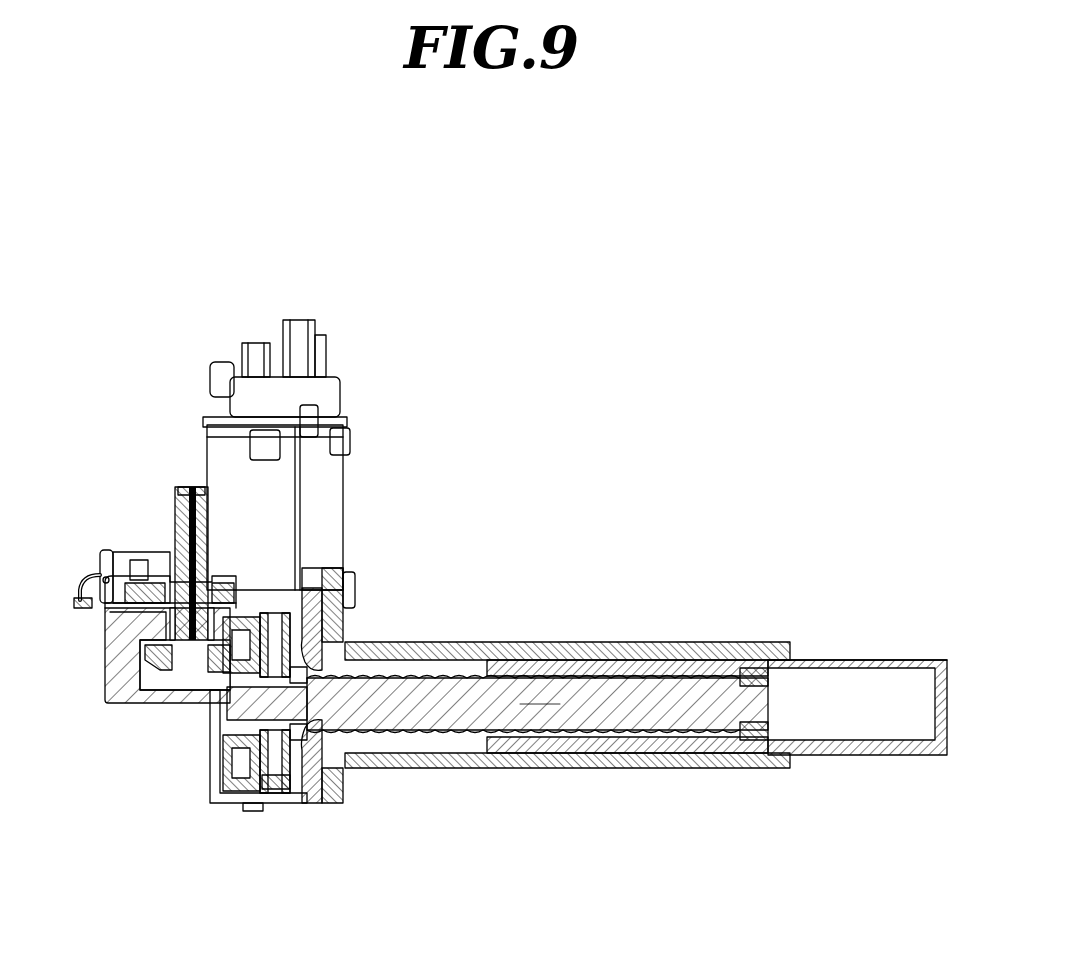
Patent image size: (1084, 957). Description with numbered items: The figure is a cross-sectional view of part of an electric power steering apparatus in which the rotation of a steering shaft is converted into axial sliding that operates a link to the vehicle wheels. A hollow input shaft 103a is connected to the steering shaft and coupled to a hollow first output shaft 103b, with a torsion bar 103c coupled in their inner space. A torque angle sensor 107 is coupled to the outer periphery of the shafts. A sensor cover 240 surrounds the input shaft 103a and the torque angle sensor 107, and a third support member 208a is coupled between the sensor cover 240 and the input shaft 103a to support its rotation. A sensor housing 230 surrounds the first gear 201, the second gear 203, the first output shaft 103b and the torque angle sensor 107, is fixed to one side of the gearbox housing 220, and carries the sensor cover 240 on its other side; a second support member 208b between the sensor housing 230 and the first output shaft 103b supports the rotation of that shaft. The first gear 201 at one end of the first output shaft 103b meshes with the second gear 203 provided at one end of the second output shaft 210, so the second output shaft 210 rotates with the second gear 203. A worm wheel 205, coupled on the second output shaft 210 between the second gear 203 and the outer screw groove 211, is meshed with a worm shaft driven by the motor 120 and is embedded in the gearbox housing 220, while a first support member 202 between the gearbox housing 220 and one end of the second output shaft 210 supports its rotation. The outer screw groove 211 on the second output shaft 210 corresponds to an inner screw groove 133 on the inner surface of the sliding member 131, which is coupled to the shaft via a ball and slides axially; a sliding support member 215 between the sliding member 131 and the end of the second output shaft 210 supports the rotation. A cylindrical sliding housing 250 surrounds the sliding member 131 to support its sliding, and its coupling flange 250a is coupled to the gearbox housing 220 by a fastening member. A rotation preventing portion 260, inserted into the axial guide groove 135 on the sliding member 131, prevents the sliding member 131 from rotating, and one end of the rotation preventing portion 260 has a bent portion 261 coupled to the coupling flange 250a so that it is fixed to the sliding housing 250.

The motor 120 is at (352, 372).
The input shaft 103a is at (175, 495).
The torsion bar 103c is at (180, 487).
The sensor cover 240 is at (150, 580).
The torque angle sensor 107 is at (152, 618).
The first output shaft 103b is at (150, 700).
The third support member 208a is at (118, 552).
The second support member 208b is at (148, 660).
The second gear 203 is at (215, 780).
The first gear 201 is at (260, 700).
The first support member 202 is at (312, 760).
The sensor housing 230 is at (225, 690).
The worm wheel 205 is at (280, 795).
The gearbox housing 220 is at (300, 803).
The bent portion 261 is at (350, 640).
The coupling flange 250a is at (345, 568).
The rotation preventing portion 260 is at (690, 642).
The outer screw groove 211 is at (467, 768).
The second output shaft 210 is at (470, 678).
The inner screw groove 133 is at (540, 730).
The sliding support member 215 is at (752, 755).
The sliding member 131 is at (852, 755).
The guide groove 135 is at (855, 660).
The sliding housing 250 is at (613, 778).